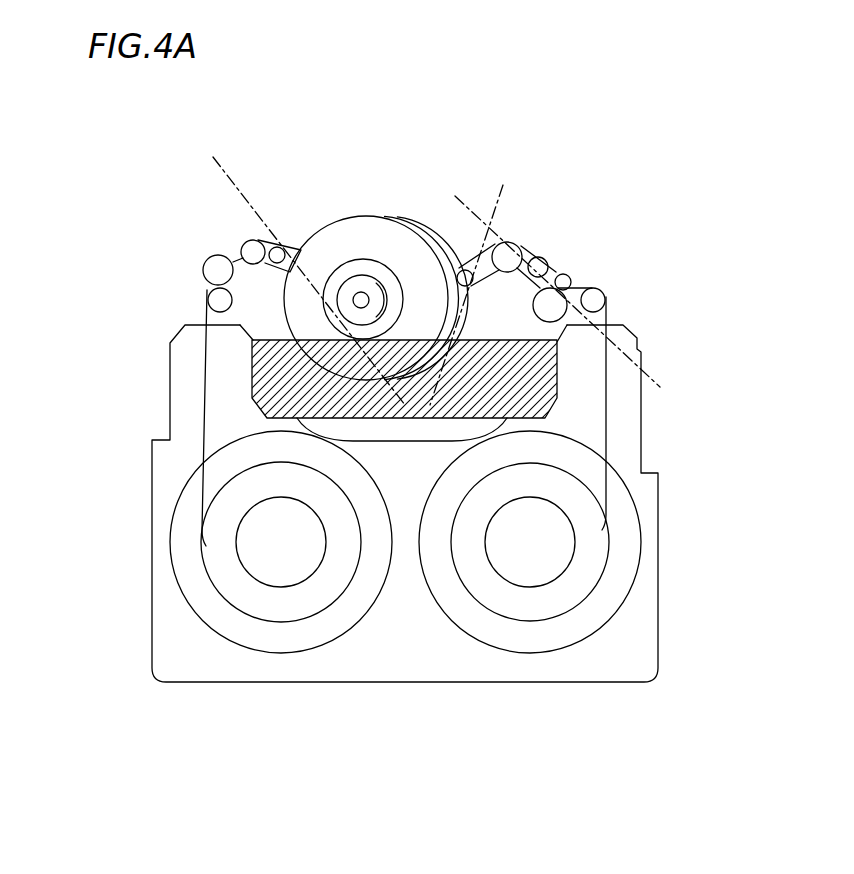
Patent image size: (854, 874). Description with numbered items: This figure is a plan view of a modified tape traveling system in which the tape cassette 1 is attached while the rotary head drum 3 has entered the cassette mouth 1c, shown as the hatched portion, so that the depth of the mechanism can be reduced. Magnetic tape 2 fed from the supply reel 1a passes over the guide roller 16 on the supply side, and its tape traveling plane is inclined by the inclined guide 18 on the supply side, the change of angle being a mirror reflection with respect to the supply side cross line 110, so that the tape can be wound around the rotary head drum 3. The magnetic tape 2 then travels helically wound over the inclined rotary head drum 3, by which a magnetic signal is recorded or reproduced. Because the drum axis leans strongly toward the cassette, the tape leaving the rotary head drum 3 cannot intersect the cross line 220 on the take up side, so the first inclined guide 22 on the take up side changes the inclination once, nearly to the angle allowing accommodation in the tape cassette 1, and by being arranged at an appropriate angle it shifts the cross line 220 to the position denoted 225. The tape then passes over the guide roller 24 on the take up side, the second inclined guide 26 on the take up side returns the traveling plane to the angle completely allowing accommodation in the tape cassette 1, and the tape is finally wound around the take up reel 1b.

The tape cassette 1 is at (383, 660).
The supply reel 1a is at (185, 541).
The take up reel 1b is at (620, 546).
The cassette mouth 1c is at (520, 387).
The magnetic tape 2 is at (202, 396).
The rotary head drum 3 is at (378, 240).
The guide roller on the supply side 16 is at (246, 249).
The inclined guide on the supply side 18 is at (279, 250).
The first inclined guide on the take up side 22 is at (465, 270).
The guide roller on the take up side 24 is at (517, 245).
The second inclined guide on the take up side 26 is at (548, 265).
The supply side cross line 110 is at (253, 200).
The cross line on the take up side 220 is at (496, 218).
The changed position of the take up side cross line 225 is at (461, 200).